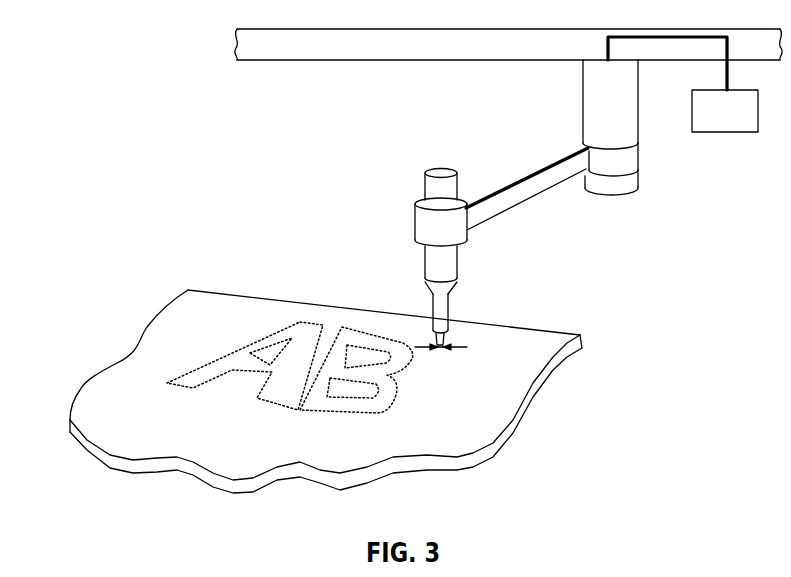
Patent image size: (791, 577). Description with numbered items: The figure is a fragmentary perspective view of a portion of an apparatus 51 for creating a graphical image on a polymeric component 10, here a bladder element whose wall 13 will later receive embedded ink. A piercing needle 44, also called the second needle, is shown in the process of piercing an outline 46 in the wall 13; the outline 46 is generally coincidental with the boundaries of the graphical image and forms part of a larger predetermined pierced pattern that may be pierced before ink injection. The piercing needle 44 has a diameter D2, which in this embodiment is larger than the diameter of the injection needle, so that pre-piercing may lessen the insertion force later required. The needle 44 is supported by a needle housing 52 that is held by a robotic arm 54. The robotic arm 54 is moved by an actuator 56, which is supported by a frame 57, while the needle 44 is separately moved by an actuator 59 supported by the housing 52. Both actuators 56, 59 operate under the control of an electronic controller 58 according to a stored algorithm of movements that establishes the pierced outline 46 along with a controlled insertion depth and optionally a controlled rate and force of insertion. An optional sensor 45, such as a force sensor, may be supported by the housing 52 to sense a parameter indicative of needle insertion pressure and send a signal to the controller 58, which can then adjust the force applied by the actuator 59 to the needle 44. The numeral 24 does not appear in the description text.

The polymeric component 10 is at (93, 246).
The wall 13 is at (188, 305).
The component / substrate 24 is at (301, 366).
The piercing needle 44 is at (446, 342).
The sensor 45 is at (446, 231).
The outline 46 is at (274, 332).
The apparatus 51 is at (675, 239).
The needle housing 52 is at (433, 258).
The robotic arm 54 is at (542, 171).
The actuator 56 is at (598, 78).
The frame 57 is at (272, 40).
The electronic controller 58 is at (730, 133).
The actuator 59 is at (430, 190).
The diameter D2 is at (447, 351).